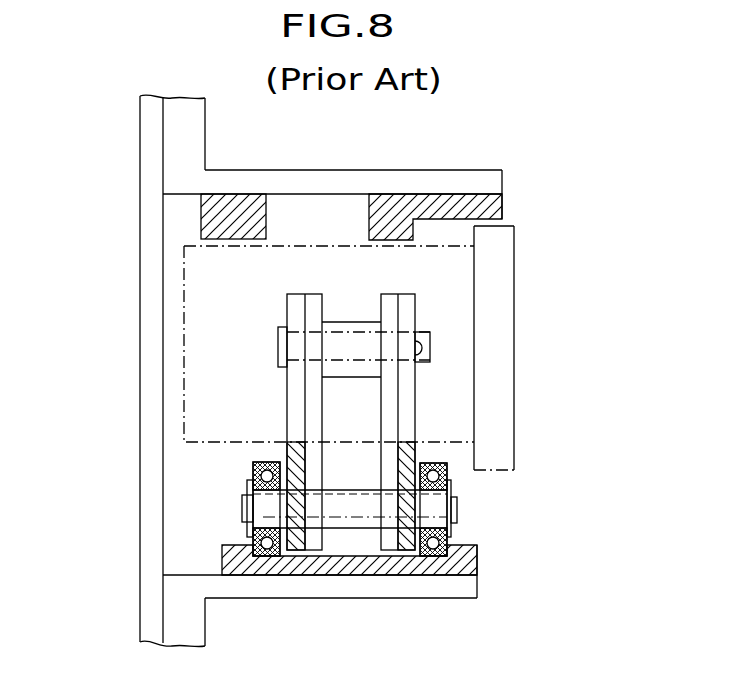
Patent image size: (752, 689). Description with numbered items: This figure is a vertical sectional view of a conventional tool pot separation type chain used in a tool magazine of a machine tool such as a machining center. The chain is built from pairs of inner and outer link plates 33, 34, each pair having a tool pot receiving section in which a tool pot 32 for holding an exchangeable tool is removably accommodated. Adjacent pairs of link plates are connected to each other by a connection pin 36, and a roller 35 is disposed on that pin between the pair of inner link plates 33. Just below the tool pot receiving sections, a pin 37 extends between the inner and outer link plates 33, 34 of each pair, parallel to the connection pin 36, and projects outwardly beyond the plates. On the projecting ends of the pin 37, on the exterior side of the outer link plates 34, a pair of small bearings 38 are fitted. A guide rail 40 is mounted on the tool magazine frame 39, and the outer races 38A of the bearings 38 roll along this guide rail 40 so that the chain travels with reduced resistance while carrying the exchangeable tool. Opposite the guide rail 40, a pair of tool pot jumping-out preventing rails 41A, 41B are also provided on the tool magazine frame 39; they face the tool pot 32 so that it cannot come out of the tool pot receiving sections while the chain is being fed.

The tool pot 32 is at (447, 407).
The inner link plate 33 is at (315, 298).
The outer link plate 34 is at (295, 308).
The roller 35 is at (347, 319).
The connection pin 36 is at (278, 355).
The pin 37 is at (425, 510).
The small bearing 38 is at (430, 557).
The outer race 38A is at (253, 467).
The tool magazine frame 39 is at (150, 192).
The guide rail 40 is at (273, 566).
The tool pot jumping-out preventing rail 41A is at (440, 203).
The tool pot jumping-out preventing rail 41B is at (237, 203).